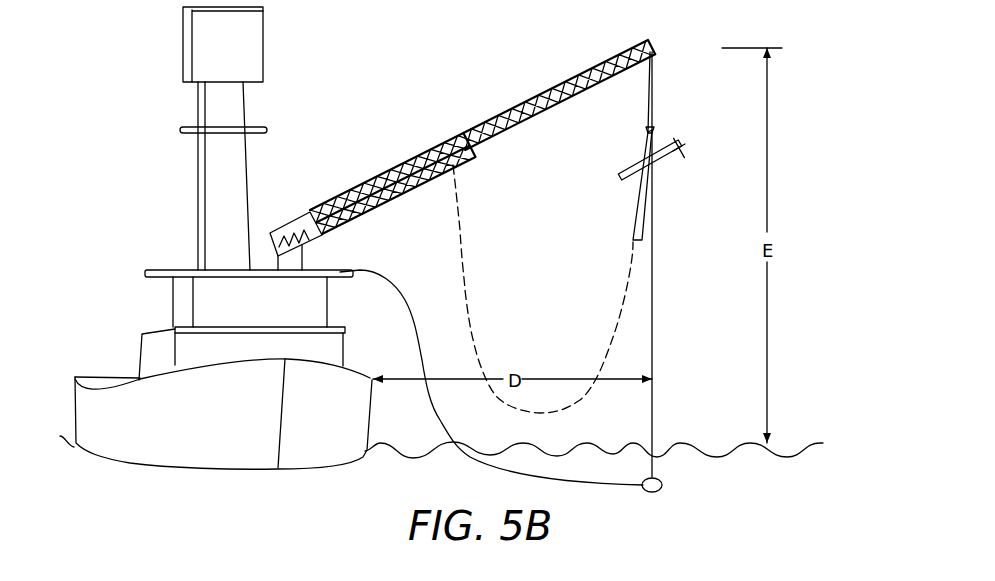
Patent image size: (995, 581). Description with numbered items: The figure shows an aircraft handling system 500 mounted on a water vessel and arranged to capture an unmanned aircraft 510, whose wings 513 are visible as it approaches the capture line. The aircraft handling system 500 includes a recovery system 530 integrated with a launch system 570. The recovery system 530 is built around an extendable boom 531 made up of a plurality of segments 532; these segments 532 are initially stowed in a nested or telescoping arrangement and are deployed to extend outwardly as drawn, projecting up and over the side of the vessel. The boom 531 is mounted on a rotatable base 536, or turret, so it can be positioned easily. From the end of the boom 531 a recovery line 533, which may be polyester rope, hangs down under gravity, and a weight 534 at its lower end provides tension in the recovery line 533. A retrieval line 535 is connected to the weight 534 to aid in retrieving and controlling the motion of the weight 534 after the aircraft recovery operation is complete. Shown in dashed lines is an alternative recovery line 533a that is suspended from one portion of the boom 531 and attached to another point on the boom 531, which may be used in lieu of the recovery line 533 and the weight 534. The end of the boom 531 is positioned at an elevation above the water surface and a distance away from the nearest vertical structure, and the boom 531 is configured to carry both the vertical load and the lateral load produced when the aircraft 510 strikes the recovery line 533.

The aircraft handling system 500 is at (294, 156).
The launch system 570 is at (348, 179).
The recovery system 530 is at (499, 109).
The segments 532 is at (590, 68).
The extendable boom 531 is at (476, 162).
The rotatable base 536 is at (305, 261).
The retrieval line 535 is at (413, 318).
The weight 534 is at (662, 487).
The recovery line 533 is at (655, 88).
The recovery line 533a is at (630, 283).
The wings 513 is at (640, 148).
The unmanned aircraft 510 is at (663, 163).